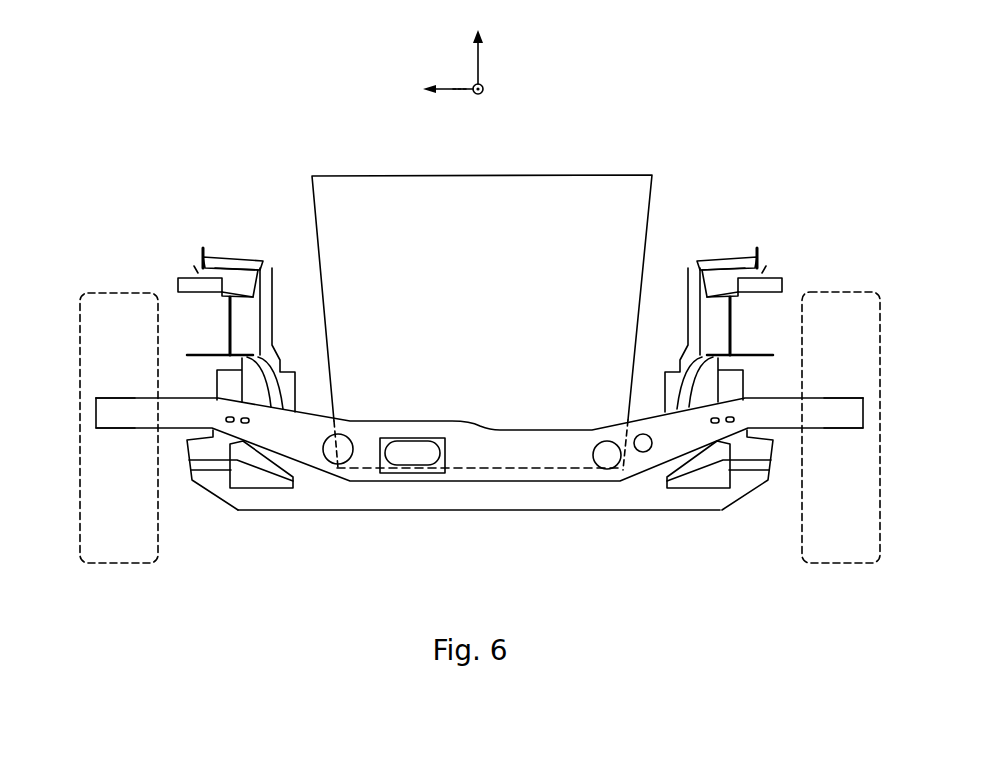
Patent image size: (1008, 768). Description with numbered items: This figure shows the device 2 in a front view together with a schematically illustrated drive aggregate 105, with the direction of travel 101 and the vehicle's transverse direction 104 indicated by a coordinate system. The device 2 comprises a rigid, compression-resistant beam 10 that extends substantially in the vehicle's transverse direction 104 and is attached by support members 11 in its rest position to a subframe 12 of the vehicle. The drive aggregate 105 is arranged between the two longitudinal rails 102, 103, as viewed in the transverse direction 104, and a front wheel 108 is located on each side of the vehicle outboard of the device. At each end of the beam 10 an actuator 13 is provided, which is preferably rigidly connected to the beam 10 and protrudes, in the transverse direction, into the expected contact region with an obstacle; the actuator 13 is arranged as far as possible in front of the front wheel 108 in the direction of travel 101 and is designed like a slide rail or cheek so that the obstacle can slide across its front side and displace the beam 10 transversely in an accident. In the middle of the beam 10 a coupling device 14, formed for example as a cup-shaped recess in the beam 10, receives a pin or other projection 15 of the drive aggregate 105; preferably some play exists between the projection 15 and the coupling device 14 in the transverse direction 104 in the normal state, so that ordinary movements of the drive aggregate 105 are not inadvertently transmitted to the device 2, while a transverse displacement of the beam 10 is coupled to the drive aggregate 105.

The device 2 is at (328, 490).
The beam 10 is at (541, 475).
The support members 11 is at (225, 432).
The subframe 12 is at (463, 497).
The actuator 13 is at (133, 413).
The coupling device 14 is at (410, 473).
The projection 15 is at (415, 450).
The direction of travel 101 is at (484, 88).
The longitudinal rail 102 is at (220, 268).
The longitudinal rail 103 is at (728, 262).
The vehicle's transverse direction 104 is at (453, 91).
The drive aggregate 105 is at (489, 310).
The front wheel 108 is at (113, 540).